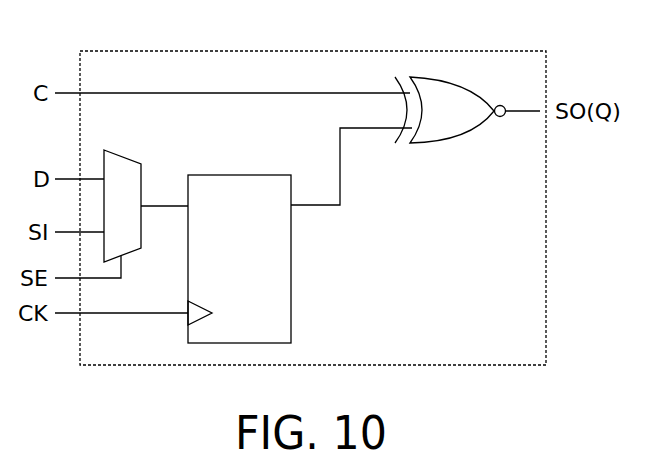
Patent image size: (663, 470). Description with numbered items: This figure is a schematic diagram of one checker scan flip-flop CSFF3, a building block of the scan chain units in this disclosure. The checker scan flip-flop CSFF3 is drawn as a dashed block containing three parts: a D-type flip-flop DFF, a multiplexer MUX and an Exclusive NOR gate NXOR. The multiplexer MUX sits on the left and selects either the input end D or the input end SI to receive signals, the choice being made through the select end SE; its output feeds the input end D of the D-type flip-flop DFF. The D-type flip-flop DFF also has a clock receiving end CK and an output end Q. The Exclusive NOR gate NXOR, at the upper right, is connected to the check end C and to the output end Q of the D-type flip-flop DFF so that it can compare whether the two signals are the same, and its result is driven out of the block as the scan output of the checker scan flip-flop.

The checker scan flip-flop CSFF3 is at (450, 51).
The multiplexer MUX is at (122, 157).
The D-type flip-flop DFF is at (222, 344).
The Exclusive NOR gate NXOR is at (458, 140).